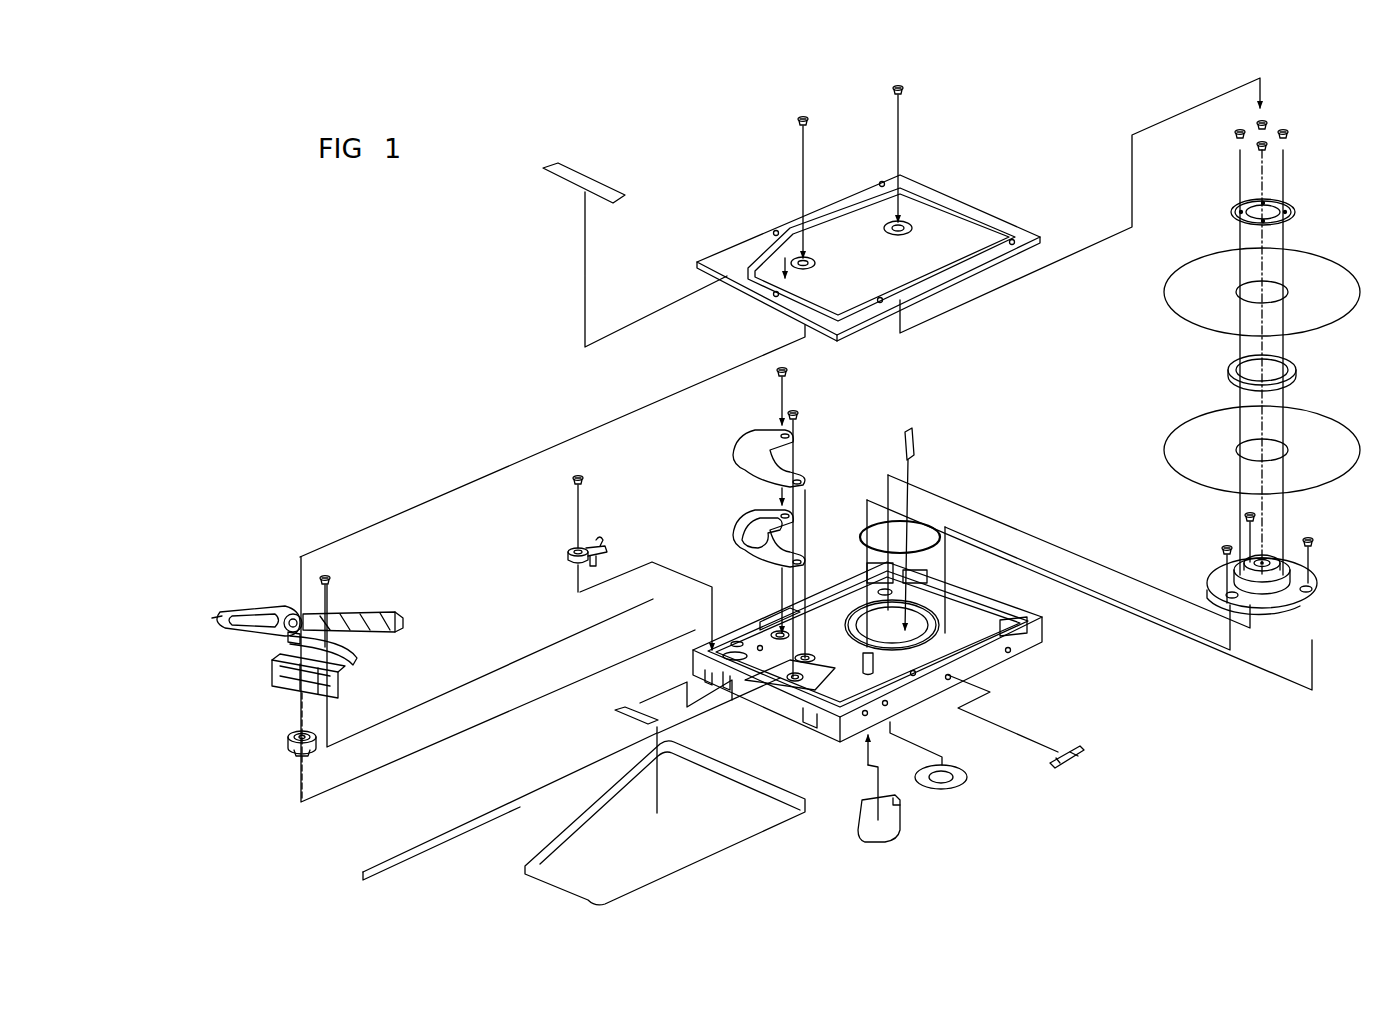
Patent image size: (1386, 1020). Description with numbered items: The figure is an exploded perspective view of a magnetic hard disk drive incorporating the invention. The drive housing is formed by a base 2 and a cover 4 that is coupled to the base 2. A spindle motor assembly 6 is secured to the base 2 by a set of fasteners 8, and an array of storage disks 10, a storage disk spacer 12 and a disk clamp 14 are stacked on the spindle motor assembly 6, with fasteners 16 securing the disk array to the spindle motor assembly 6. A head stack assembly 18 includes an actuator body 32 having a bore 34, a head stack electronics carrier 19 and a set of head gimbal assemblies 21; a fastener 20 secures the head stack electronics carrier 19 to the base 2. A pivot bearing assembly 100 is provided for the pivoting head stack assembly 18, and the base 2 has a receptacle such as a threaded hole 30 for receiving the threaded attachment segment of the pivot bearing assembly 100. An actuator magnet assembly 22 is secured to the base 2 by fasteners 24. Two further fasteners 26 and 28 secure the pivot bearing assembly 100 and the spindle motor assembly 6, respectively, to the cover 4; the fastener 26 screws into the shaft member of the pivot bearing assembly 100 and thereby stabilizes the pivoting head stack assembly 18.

The base 2 is at (995, 672).
The cover 4 is at (732, 273).
The spindle motor assembly 6 is at (1223, 597).
The fasteners 8 is at (1308, 550).
The storage disks 10 is at (1212, 445).
The storage disk spacer 12 is at (1298, 383).
The disk clamp 14 is at (1232, 221).
The fasteners 16 is at (1290, 148).
The head stack assembly 18 is at (262, 597).
The head stack electronics carrier 19 is at (322, 670).
The fastener 20 is at (337, 578).
The head gimbal assemblies 21 is at (365, 610).
The actuator magnet assembly 22 is at (728, 547).
The fasteners 24 is at (805, 428).
The fastener 26 is at (800, 133).
The fastener 28 is at (910, 103).
The threaded hole 30 is at (815, 672).
The actuator body 32 is at (315, 627).
The bore 34 is at (295, 623).
The pivot bearing assembly 100 is at (315, 735).